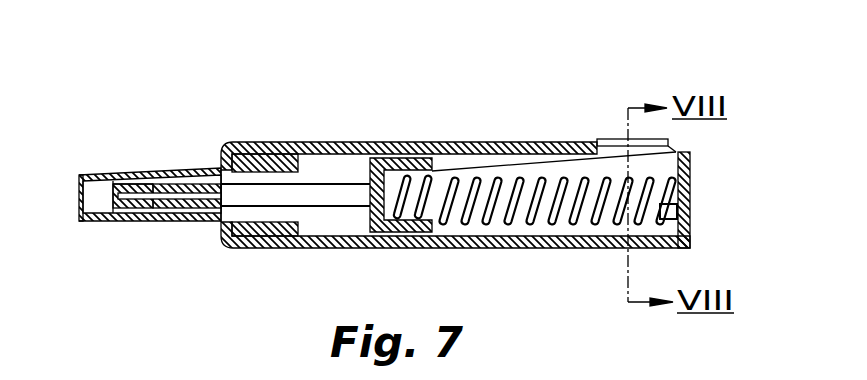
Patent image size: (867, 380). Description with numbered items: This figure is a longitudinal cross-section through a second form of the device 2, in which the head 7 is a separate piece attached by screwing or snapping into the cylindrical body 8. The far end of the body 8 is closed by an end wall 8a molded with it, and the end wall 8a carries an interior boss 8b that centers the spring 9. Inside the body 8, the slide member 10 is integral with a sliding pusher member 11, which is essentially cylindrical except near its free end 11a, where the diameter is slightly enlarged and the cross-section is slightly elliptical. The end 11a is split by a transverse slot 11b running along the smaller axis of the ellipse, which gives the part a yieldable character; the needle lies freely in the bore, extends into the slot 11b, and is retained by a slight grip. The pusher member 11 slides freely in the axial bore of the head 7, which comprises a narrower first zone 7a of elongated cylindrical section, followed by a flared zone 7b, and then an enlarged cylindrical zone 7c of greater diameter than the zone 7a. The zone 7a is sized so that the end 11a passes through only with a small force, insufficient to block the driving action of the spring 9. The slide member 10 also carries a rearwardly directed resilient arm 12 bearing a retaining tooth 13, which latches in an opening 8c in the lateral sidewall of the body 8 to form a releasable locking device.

The valve 2 is at (131, 196).
The head 7 is at (200, 172).
The narrower first zone 7a is at (250, 206).
The flared zone 7b is at (113, 184).
The enlarged cylindrical zone 7c is at (82, 207).
The cylindrical body 8 is at (470, 139).
The end wall 8a is at (692, 162).
The interior boss 8b is at (668, 211).
The opening 8c is at (680, 149).
The spring 9 is at (557, 222).
The slide member 10 is at (374, 233).
The sliding pusher member 11 is at (315, 196).
The free end 11a is at (146, 208).
The transverse slot 11b is at (174, 206).
The resilient arm 12 is at (527, 140).
The retaining tooth 13 is at (607, 139).